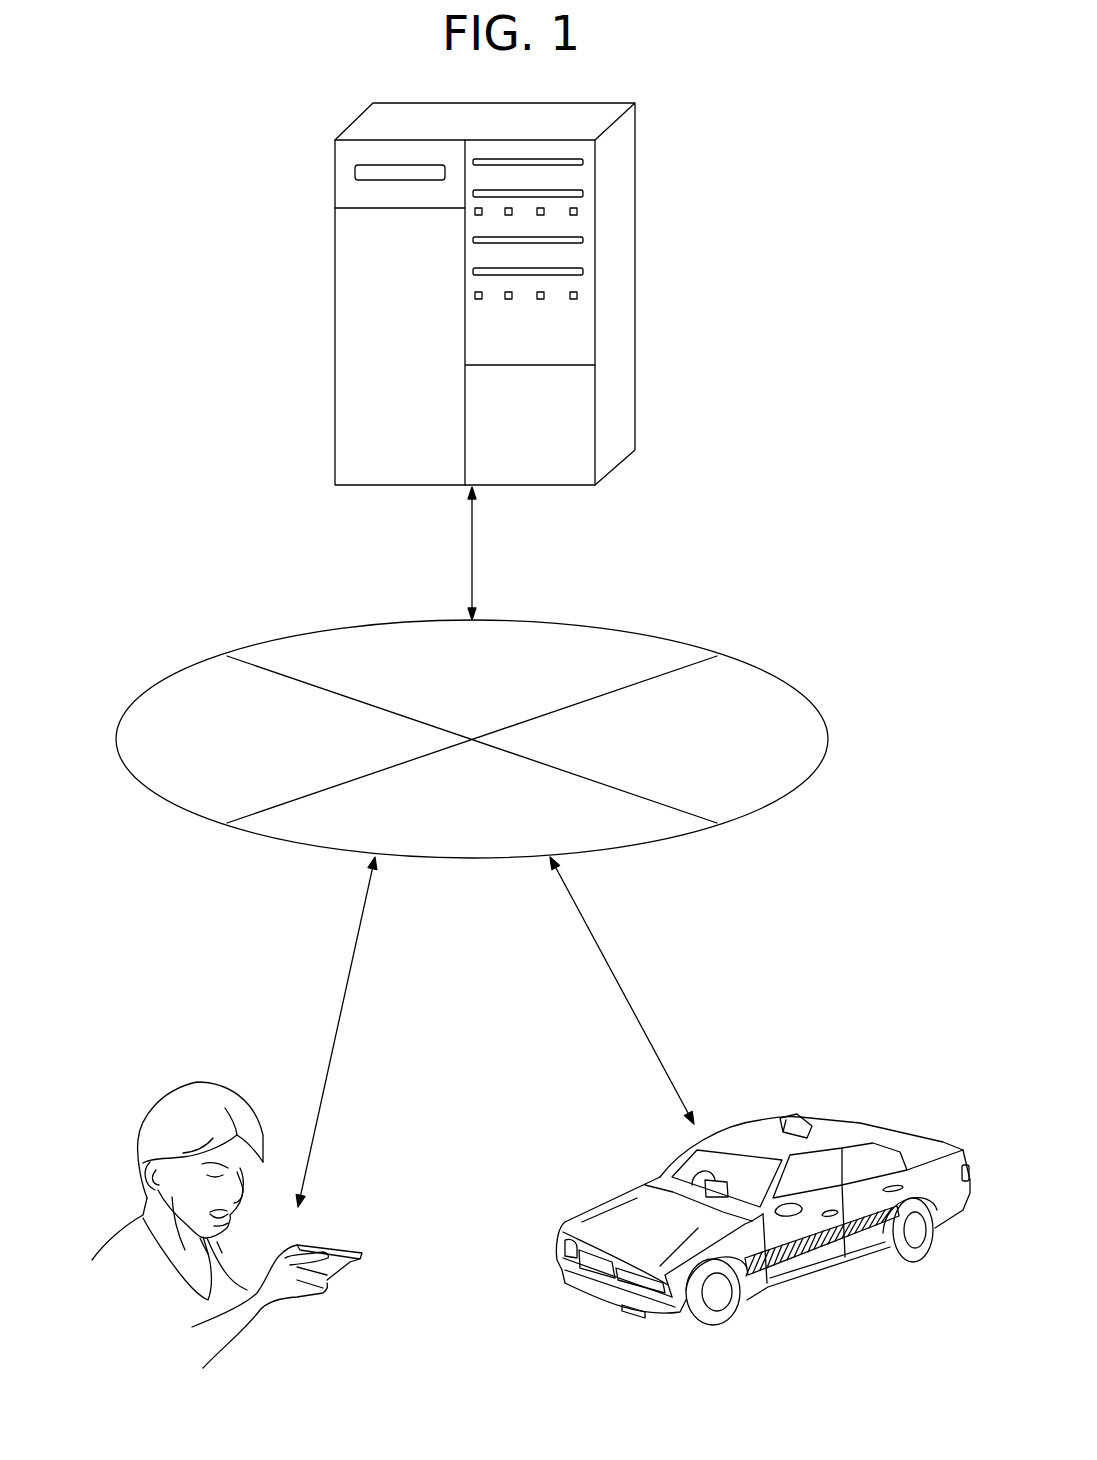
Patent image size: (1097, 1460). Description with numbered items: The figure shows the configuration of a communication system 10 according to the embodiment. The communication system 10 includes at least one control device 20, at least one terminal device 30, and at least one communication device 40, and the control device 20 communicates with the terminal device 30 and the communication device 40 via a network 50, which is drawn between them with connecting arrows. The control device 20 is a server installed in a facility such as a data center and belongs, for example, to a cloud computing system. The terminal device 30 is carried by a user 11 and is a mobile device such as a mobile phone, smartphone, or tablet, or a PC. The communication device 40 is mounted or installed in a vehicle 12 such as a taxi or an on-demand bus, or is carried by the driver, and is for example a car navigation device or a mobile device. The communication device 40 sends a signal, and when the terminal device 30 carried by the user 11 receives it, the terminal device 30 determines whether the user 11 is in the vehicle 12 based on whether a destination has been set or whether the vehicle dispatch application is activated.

The communication system 10 is at (882, 480).
The user 11 is at (138, 1146).
The vehicle 12 is at (817, 1277).
The control device 20 is at (335, 300).
The terminal device 30 is at (352, 1263).
The communication device 40 is at (727, 1184).
The network 50 is at (828, 737).